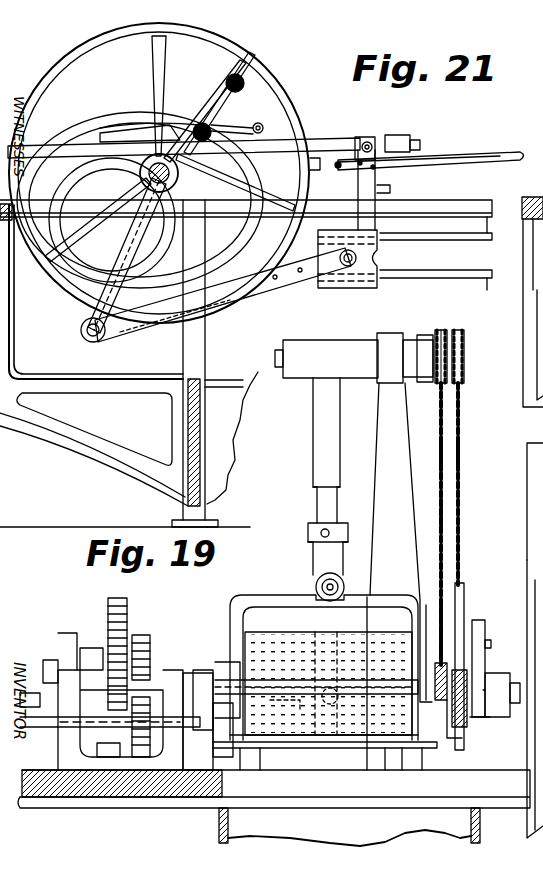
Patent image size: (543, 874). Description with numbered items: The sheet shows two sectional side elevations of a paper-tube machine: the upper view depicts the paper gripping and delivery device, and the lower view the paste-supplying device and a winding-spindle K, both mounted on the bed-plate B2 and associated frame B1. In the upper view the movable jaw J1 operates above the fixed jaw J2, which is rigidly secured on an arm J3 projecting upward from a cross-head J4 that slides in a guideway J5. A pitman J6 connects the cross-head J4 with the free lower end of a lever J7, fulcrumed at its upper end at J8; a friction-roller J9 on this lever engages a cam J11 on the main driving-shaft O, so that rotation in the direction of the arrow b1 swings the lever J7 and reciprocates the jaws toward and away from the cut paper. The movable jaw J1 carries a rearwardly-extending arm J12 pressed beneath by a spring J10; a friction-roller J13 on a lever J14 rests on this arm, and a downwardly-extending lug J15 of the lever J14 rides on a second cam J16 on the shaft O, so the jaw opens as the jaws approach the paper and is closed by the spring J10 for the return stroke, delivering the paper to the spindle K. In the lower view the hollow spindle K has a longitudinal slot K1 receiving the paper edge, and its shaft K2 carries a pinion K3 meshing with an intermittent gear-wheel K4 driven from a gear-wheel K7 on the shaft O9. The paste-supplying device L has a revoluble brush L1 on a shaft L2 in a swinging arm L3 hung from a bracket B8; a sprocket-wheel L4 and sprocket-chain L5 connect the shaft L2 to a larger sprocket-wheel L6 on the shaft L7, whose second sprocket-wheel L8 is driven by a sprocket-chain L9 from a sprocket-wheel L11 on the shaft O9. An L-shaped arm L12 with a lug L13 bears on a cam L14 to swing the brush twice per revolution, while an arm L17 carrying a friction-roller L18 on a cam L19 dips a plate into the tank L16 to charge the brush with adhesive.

In FIG. 21, the arrow b1 is at (272, 74).
In FIG. 21, the movable jaw J1 is at (457, 152).
In FIG. 21, the fixed jaw J2 is at (415, 200).
In FIG. 21, the arm J3 is at (377, 192).
In FIG. 21, the cross-head J4 is at (370, 289).
In FIG. 21, the guideway J5 is at (445, 279).
In FIG. 21, the pitman J6 is at (242, 292).
In FIG. 21, the lever J7 is at (140, 250).
In FIG. 21, the fulcrum J8 is at (240, 76).
In FIG. 21, the friction-roller J9 is at (180, 170).
In FIG. 21, the spring J10 is at (334, 170).
In FIG. 21, the cam J11 is at (176, 247).
In FIG. 21, the rearwardly-extending arm J12 is at (360, 140).
In FIG. 21, the friction-roller J13 is at (262, 123).
In FIG. 21, the lever J14 is at (272, 100).
In FIG. 21, the downwardly-extending lug J15 is at (157, 147).
In FIG. 21, the cam J16 is at (142, 184).
In FIG. 21, the main driving-shaft O is at (140, 172).
In FIG. 21, the frame B1 is at (50, 378).
In FIG. 21, the bed-plate B2 is at (473, 203).
In FIG. 19, the bed-plate B2 is at (135, 799).
In FIG. 19, the bracket B8 is at (401, 542).
In FIG. 19, the paste-supplying device L is at (307, 583).
In FIG. 19, the revoluble brush L1 is at (300, 634).
In FIG. 19, the shaft L2 is at (440, 648).
In FIG. 19, the arm L3 is at (344, 566).
In FIG. 19, the sprocket-wheel L4 is at (442, 702).
In FIG. 19, the sprocket-chain L5 is at (440, 492).
In FIG. 19, the larger sprocket-wheel L6 is at (440, 332).
In FIG. 19, the shaft L7 is at (288, 372).
In FIG. 19, the second sprocket-wheel L8 is at (464, 372).
In FIG. 19, the sprocket-chain L9 is at (462, 452).
In FIG. 19, the sprocket-wheel L11 is at (462, 735).
In FIG. 19, the L-shaped arm L12 is at (328, 585).
In FIG. 19, the lug L13 is at (350, 746).
In FIG. 19, the cam L14 is at (348, 634).
In FIG. 19, the tank L16 is at (349, 831).
In FIG. 19, the arm L17 is at (465, 596).
In FIG. 19, the friction-roller L18 is at (481, 626).
In FIG. 19, the cam L19 is at (482, 716).
In FIG. 19, the winding-spindle K is at (204, 676).
In FIG. 19, the longitudinal slot K1 is at (58, 757).
In FIG. 19, the shaft K2 is at (90, 648).
In FIG. 19, the pinion K3 is at (107, 685).
In FIG. 19, the intermittent gear-wheel K4 is at (128, 612).
In FIG. 19, the gear-wheel K7 is at (151, 645).
In FIG. 19, the shaft O9 is at (516, 683).